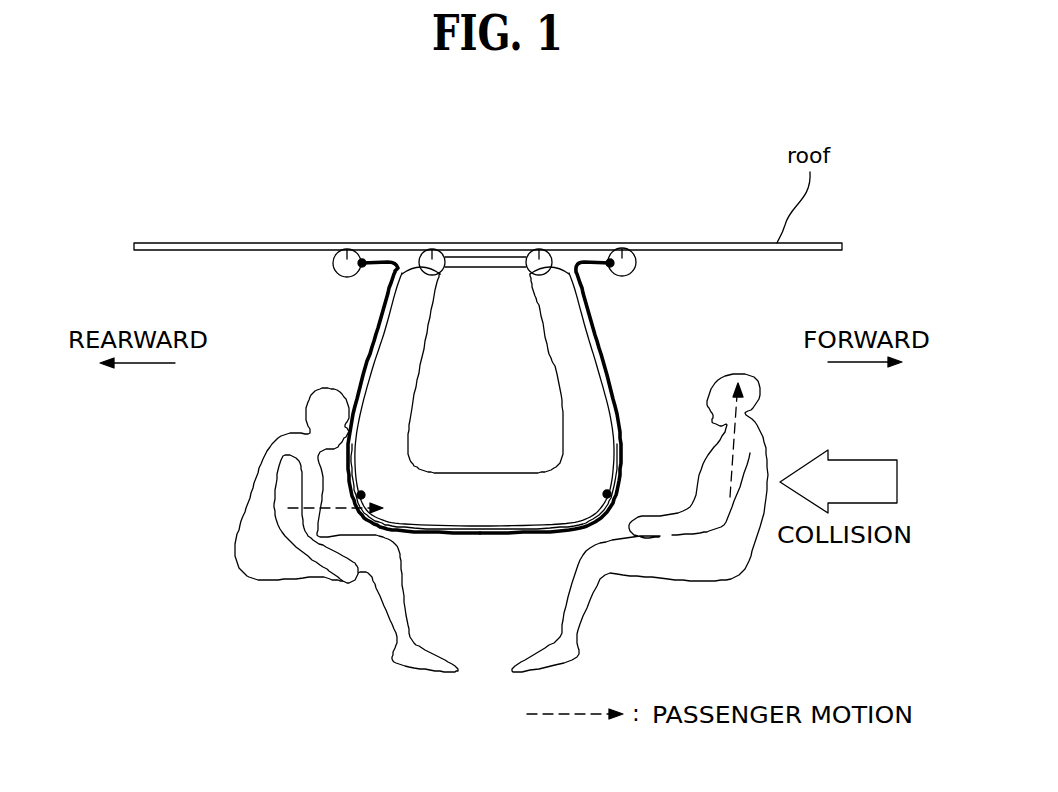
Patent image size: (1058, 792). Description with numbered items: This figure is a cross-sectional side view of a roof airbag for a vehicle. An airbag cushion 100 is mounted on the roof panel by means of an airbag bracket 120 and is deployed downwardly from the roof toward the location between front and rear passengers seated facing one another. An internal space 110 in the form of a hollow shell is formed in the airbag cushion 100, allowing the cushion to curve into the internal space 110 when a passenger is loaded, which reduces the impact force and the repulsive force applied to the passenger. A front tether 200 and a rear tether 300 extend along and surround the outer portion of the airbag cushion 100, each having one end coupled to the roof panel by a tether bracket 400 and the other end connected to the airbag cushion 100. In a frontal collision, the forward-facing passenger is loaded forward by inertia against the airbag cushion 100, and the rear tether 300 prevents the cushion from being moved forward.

The airbag cushion 100 is at (390, 363).
The internal space 110 is at (494, 352).
The airbag bracket 120 is at (432, 258).
The front tether 200 is at (600, 337).
The rear tether 300 is at (377, 330).
The tether bracket 400 is at (350, 258).